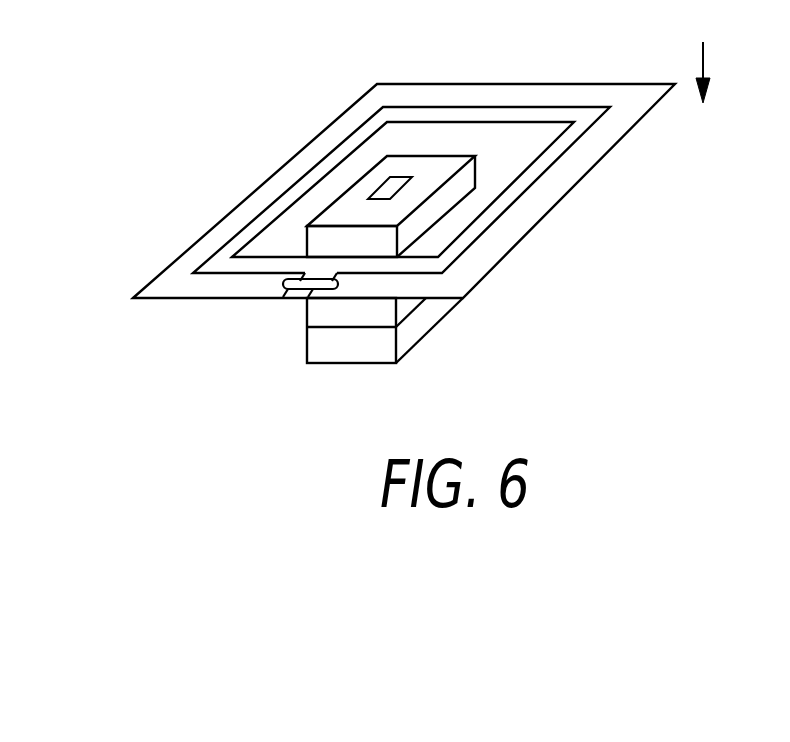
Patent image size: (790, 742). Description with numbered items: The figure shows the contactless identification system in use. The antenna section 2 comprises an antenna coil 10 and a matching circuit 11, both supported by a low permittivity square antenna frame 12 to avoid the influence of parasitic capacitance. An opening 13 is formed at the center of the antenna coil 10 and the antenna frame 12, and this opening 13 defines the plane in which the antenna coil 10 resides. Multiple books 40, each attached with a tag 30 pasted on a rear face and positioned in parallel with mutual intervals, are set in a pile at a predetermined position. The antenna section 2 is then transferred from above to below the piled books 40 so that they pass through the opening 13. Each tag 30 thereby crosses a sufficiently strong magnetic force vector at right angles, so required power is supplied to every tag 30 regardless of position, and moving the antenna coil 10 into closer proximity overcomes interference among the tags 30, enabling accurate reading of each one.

The antenna section 2 is at (144, 328).
The antenna coil 10 is at (522, 106).
The matching circuit 11 is at (283, 283).
The antenna frame 12 is at (280, 186).
The opening 13 is at (397, 138).
The tag 30 is at (390, 184).
The books 40 is at (442, 318).